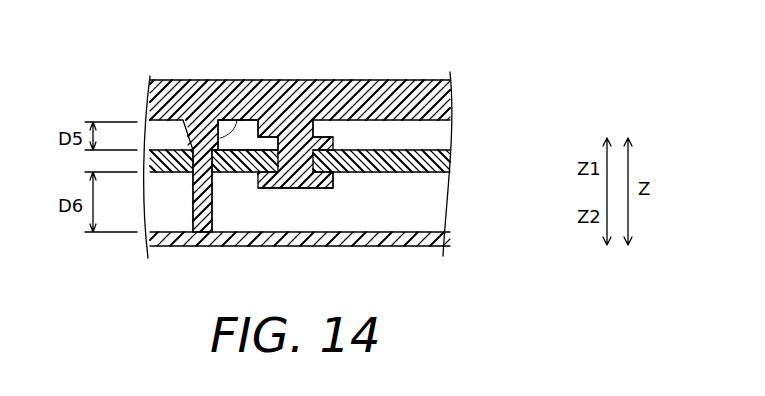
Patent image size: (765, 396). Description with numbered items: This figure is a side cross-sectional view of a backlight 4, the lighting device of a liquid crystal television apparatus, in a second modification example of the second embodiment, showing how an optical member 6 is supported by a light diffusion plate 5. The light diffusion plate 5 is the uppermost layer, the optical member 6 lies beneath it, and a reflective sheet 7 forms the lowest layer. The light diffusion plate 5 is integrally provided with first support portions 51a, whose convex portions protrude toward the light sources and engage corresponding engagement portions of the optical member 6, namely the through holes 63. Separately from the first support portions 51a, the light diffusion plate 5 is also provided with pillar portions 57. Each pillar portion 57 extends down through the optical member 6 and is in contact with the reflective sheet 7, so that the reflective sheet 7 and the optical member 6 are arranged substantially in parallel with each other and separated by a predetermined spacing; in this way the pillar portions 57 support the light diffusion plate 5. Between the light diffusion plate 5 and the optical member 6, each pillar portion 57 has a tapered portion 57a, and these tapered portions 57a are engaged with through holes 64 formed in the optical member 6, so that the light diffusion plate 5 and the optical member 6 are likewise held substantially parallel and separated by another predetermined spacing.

The backlight 4 is at (516, 86).
The light diffusion plate 5 is at (451, 101).
The optical member 6 is at (449, 162).
The reflective sheet 7 is at (444, 237).
The pillar portion 57 is at (222, 193).
The tapered portion 57a is at (238, 119).
The through hole 64 is at (219, 138).
The through hole 63 is at (314, 141).
The first support portion 51a is at (340, 183).